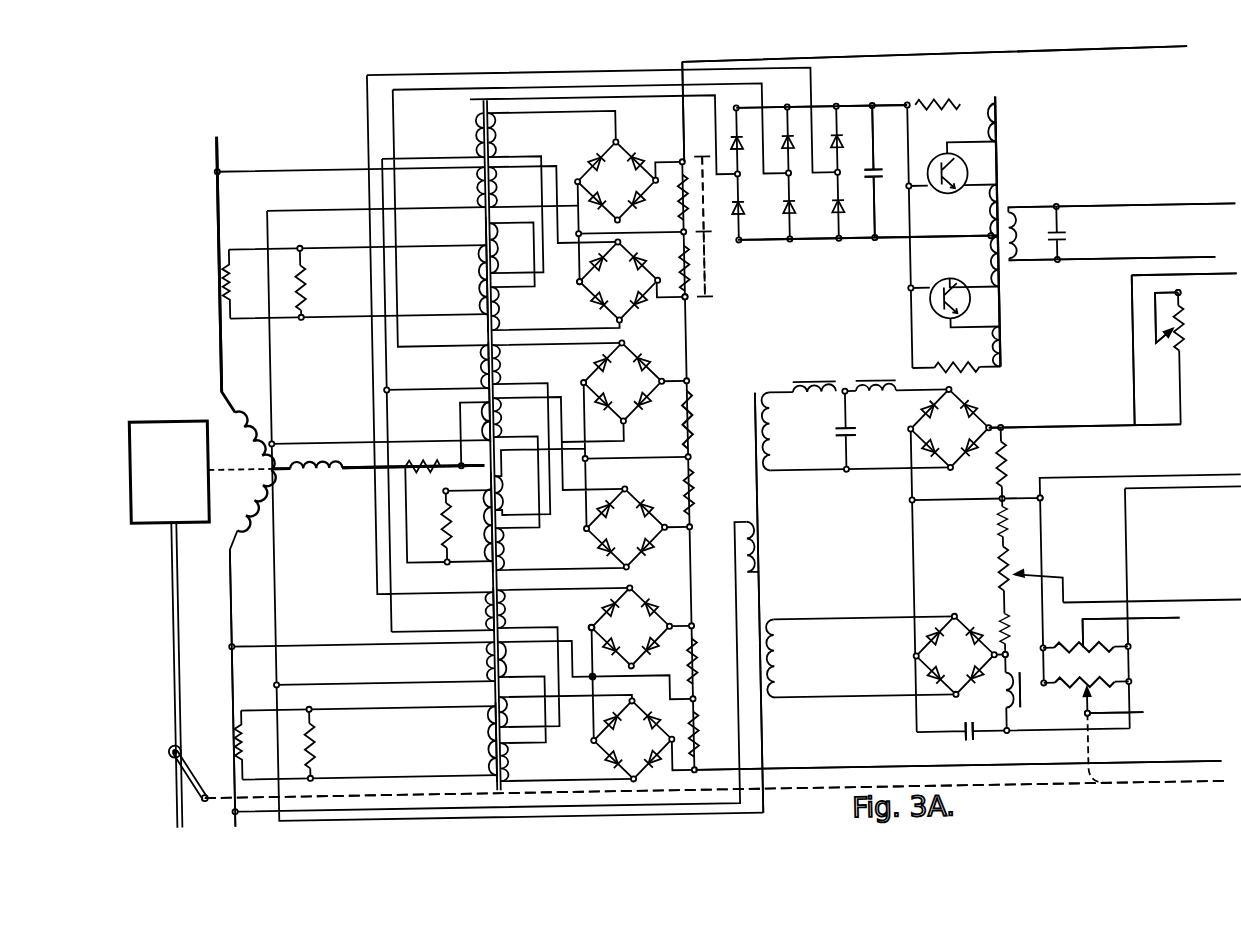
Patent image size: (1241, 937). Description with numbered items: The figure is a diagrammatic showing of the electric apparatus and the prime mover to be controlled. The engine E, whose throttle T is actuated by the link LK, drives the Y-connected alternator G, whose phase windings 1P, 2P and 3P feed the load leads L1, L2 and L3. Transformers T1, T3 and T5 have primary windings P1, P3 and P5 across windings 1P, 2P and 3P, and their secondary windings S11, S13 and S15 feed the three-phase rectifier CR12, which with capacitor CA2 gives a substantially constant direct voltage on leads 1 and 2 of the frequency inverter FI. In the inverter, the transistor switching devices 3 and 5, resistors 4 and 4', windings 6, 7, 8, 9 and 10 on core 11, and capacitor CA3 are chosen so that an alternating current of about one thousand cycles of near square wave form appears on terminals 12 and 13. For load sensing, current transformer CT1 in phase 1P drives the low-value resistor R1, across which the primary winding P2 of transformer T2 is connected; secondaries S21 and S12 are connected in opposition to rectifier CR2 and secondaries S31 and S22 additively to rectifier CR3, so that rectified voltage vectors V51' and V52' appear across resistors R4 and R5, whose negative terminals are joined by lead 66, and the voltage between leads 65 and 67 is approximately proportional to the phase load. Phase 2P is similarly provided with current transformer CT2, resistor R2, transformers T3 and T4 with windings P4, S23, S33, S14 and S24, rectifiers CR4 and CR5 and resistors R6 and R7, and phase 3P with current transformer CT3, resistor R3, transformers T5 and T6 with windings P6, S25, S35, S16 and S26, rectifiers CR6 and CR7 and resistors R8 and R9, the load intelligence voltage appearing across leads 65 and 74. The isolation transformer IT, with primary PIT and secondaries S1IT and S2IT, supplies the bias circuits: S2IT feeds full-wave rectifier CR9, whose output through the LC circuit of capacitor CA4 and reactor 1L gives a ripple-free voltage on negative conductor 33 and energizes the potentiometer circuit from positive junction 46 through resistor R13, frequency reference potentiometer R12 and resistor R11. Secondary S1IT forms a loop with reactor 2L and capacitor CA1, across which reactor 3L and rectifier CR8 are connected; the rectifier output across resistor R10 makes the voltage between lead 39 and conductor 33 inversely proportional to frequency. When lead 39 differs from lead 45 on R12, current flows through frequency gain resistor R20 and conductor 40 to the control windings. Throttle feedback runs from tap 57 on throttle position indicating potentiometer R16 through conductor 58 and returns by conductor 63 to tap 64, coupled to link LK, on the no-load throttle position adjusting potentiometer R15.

The engine E is at (209, 493).
The throttle T is at (163, 744).
The load lead L1 is at (223, 140).
The load lead L2 is at (485, 459).
The load lead L3 is at (228, 818).
The phase winding 1P is at (247, 430).
The phase winding 2P is at (327, 462).
The phase winding 3P is at (241, 532).
The alternator G is at (302, 489).
The current transformer CT1 is at (354, 281).
The current transformer CT2 is at (426, 511).
The current transformer CT3 is at (227, 721).
The resistor R1 is at (310, 280).
The resistor R2 is at (441, 532).
The resistor R3 is at (318, 741).
The resistor R4 is at (678, 208).
The resistor R5 is at (683, 259).
The resistor R6 is at (679, 425).
The resistor R7 is at (680, 478).
The resistor R8 is at (682, 661).
The resistor R9 is at (685, 739).
The resistor R10 is at (1010, 468).
The resistor R11 is at (998, 525).
The frequency reference potentiometer R12 is at (996, 571).
The resistor R13 is at (997, 630).
The no-load throttle position adjusting potentiometer R15 is at (1078, 689).
The throttle position indicating potentiometer R16 is at (1087, 653).
The frequency gain adjustable resistor R20 is at (1163, 358).
The transformer T1 is at (461, 113).
The transformer T2 is at (470, 230).
The transformer T3 is at (483, 330).
The transformer T4 is at (488, 482).
The transformer T5 is at (488, 590).
The transformer T6 is at (488, 696).
The secondary winding S11 is at (479, 131).
The secondary winding S21 is at (500, 131).
The secondary winding S31 is at (500, 187).
The primary winding P1 is at (478, 187).
The secondary winding S12 is at (500, 242).
The secondary winding S22 is at (500, 307).
The primary winding P2 is at (478, 274).
The secondary winding S13 is at (479, 364).
The secondary winding S23 is at (500, 358).
The secondary winding S33 is at (500, 416).
The primary winding P3 is at (466, 421).
The secondary winding S14 is at (500, 491).
The secondary winding S24 is at (500, 546).
The primary winding P4 is at (478, 508).
The secondary winding S15 is at (479, 607).
The secondary winding S25 is at (500, 607).
The secondary winding S35 is at (500, 657).
The primary winding P5 is at (478, 660).
The secondary winding S16 is at (500, 712).
The secondary winding S26 is at (500, 762).
The primary winding P6 is at (478, 733).
The rectifier CR2 is at (616, 181).
The rectifier CR3 is at (618, 281).
The rectifier CR4 is at (622, 382).
The rectifier CR5 is at (625, 528).
The rectifier CR6 is at (630, 627).
The rectifier CR7 is at (632, 740).
The full-wave rectifier CR8 is at (949, 428).
The full-wave rectifier CR9 is at (955, 655).
The three-phase rectifier assembly CR12 is at (788, 198).
The rectified voltage vector V51' is at (709, 194).
The rectified voltage vector V52' is at (715, 264).
The lead 65 is at (686, 160).
The lead 66 is at (583, 278).
The lead 67 is at (686, 301).
The lead 1 is at (848, 110).
The lead 2 is at (805, 242).
The frequency inverter FI is at (882, 264).
The capacitor CA2 is at (883, 175).
The capacitor CA3 is at (1072, 245).
The capacitor CA1 is at (858, 437).
The capacitor CA4 is at (963, 747).
The switching device 3 is at (972, 160).
The resistor 4 is at (939, 93).
The resistor 4' is at (956, 359).
The switching device 5 is at (965, 296).
The electromagnetic winding 6 is at (992, 120).
The electromagnetic winding 7 is at (995, 208).
The electromagnetic winding 8 is at (995, 260).
The electromagnetic winding 9 is at (998, 355).
The electromagnetic winding 10 is at (1020, 230).
The core 11 is at (1004, 151).
The terminal 12 is at (1092, 214).
The terminal 13 is at (1162, 268).
The conductor 63 is at (1188, 284).
The conductor 40 is at (1196, 306).
The isolation transformer IT is at (750, 405).
The primary winding PIT is at (743, 518).
The secondary winding S1IT is at (787, 431).
The secondary winding S2IT is at (799, 657).
The reactor 2L is at (807, 402).
The second reactor 3L is at (875, 403).
The lead 39 is at (1068, 437).
The negative conductor 33 is at (1041, 505).
The lead 45 is at (1049, 579).
The positive junction 46 is at (1003, 661).
The tap 57 is at (1078, 647).
The conductor 58 is at (1176, 627).
The tap 64 is at (1081, 720).
The lead 74 is at (1160, 771).
The link LK is at (1145, 786).
The LC circuit LC is at (976, 729).
The reactor 1L is at (998, 708).